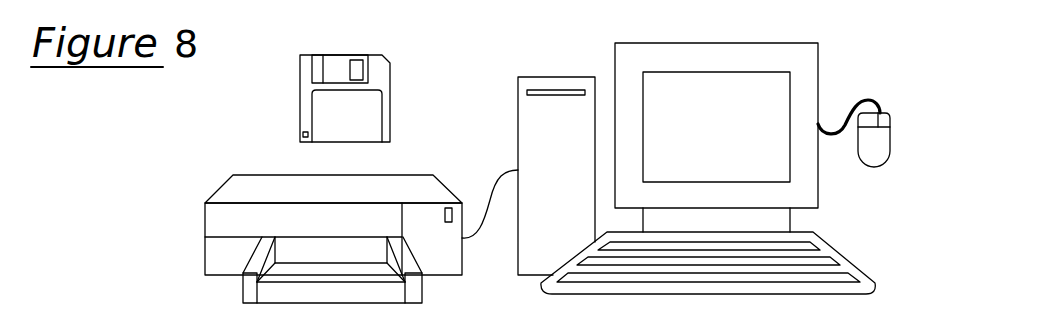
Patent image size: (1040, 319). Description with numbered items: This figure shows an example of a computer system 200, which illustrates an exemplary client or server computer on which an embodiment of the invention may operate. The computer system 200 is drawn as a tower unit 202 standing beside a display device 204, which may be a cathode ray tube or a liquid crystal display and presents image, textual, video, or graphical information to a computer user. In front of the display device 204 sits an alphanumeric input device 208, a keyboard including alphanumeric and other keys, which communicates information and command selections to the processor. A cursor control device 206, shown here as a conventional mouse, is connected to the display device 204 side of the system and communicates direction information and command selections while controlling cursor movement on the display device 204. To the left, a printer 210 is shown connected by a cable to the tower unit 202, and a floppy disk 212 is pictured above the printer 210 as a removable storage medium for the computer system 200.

The computer system 200 is at (828, 23).
The computer tower / processing unit 202 is at (557, 78).
The display device 204 is at (818, 82).
The cursor control device 206 is at (890, 140).
The alphanumeric input device 208 is at (872, 278).
The printer 210 is at (206, 194).
The floppy disk / storage medium 212 is at (299, 116).